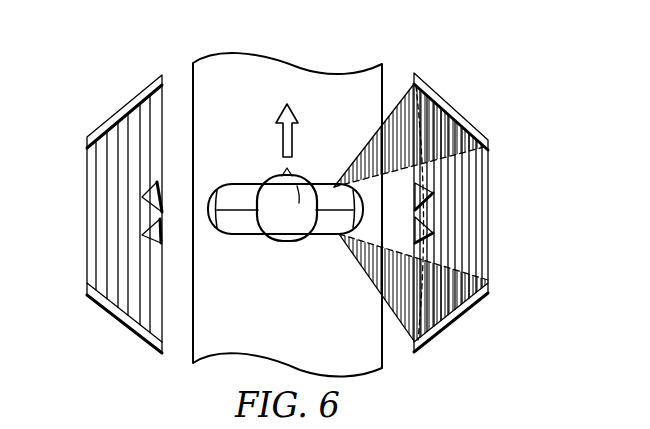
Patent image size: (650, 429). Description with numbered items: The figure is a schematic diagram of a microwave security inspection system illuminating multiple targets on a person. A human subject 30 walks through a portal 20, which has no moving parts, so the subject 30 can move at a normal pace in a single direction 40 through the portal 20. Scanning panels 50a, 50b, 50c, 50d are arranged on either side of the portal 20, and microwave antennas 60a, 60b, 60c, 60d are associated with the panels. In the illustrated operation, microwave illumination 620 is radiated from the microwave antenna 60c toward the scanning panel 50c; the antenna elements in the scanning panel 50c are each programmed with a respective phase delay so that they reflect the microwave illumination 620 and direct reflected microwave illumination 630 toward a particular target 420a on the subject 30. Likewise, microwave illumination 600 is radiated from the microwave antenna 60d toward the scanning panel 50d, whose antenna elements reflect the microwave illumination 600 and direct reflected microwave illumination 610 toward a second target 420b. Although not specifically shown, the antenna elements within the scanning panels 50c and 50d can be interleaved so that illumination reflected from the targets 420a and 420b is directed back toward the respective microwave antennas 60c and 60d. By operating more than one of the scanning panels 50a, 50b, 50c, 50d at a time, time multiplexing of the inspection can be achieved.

The portal 20 is at (344, 47).
The human subject 30 is at (272, 236).
The single direction 40 is at (280, 142).
The scanning panel 50a is at (123, 103).
The scanning panel 50b is at (123, 325).
The scanning panel 50c is at (453, 103).
The scanning panel 50d is at (452, 328).
The microwave antenna 60a is at (142, 190).
The microwave antenna 60b is at (142, 232).
The microwave antenna 60c is at (436, 200).
The microwave antenna 60d is at (436, 234).
The target 420a is at (336, 186).
The target 420b is at (331, 236).
The microwave illumination 600 is at (478, 265).
The reflected microwave illumination 610 is at (373, 285).
The microwave illumination 620 is at (478, 157).
The reflected microwave illumination 630 is at (397, 102).